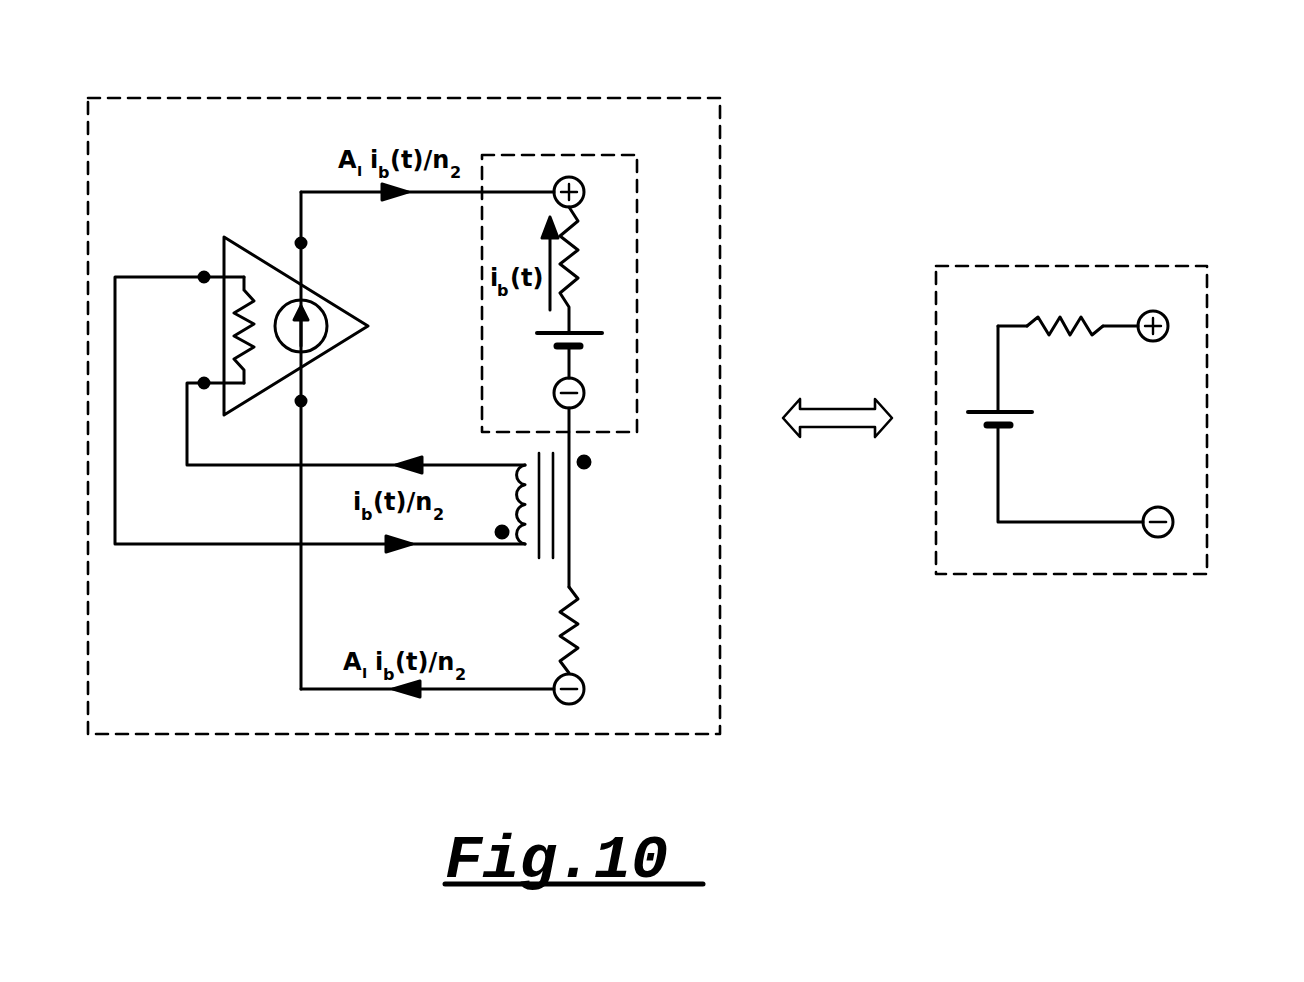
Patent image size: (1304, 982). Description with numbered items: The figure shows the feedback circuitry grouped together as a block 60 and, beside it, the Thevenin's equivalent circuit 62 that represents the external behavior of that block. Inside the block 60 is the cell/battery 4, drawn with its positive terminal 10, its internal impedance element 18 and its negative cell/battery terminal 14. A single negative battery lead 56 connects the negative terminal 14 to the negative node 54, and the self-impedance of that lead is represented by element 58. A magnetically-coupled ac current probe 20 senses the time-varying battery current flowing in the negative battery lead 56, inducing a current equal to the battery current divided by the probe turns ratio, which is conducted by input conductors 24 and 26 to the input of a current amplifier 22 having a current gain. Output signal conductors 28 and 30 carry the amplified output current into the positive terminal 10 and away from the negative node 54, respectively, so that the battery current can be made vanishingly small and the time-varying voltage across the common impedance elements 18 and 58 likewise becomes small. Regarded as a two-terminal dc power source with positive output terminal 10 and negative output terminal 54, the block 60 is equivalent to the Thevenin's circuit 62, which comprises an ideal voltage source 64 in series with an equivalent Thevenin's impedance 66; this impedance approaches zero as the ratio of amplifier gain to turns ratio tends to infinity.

The cell/battery 4 is at (476, 343).
The positive terminal 10 is at (585, 192).
The negative cell/battery terminal 14 is at (548, 399).
The internal impedance element 18 is at (575, 250).
The magnetically-coupled ac current probe 20 is at (530, 455).
The current amplifier 22 is at (272, 250).
The input conductor 24 is at (115, 360).
The input conductor 26 is at (185, 450).
The output signal conductor 28 is at (420, 192).
The output signal conductor 30 is at (300, 661).
The negative node 54 is at (586, 689).
The negative battery lead 56 is at (569, 548).
The self-impedance of negative battery lead 58 is at (555, 635).
The block 60 is at (226, 97).
The Thevenin's equivalent circuit 62 is at (1095, 262).
The ideal voltage source 64 is at (1010, 432).
The equivalent Thevenin's impedance 66 is at (1055, 340).